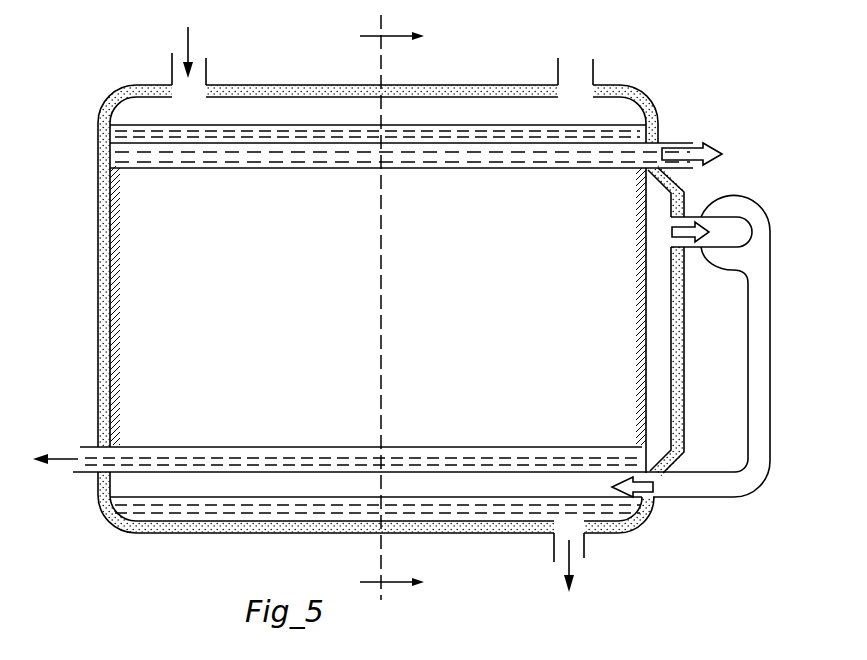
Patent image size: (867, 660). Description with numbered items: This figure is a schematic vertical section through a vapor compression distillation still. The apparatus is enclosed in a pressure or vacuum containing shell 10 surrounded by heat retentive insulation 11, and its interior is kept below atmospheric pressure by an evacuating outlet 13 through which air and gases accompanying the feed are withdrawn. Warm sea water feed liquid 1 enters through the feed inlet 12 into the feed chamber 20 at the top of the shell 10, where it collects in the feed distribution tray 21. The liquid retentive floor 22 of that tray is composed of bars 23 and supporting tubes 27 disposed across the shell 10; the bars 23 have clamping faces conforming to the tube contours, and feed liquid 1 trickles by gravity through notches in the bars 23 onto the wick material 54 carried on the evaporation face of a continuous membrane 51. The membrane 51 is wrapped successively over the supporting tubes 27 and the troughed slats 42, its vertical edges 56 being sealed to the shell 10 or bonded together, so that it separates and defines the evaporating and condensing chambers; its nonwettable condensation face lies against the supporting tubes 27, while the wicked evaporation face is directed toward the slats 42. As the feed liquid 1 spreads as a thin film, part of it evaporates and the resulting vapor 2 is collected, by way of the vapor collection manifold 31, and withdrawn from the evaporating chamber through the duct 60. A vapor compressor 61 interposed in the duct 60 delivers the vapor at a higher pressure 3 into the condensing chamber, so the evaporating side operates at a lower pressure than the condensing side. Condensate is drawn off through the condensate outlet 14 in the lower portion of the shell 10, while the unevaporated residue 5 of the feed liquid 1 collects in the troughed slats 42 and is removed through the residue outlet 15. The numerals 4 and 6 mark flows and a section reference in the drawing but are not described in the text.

The feed liquid 1 is at (189, 50).
The vapor 2 is at (672, 235).
The higher pressure 3 is at (650, 490).
The drain flow / lower liquid 4 is at (437, 512).
The unevaporated residue 5 is at (80, 447).
The section line 6- 6 is at (392, 311).
The shell 10 is at (488, 97).
The heat retentive insulation 11 is at (273, 86).
The feed inlet 12 is at (206, 69).
The evacuating outlet 13 is at (593, 72).
The condensate outlet 14 is at (584, 544).
The residue outlet 15 is at (73, 472).
The feed chamber 20 is at (405, 107).
The feed distribution tray 21 is at (553, 147).
The liquid retentive floor 22 is at (635, 152).
The bars 23 is at (547, 168).
The supporting tubes 27 is at (490, 168).
The vapor collection manifold 31 is at (687, 356).
The troughed slats 42 is at (138, 472).
The continuous membrane 51 is at (377, 347).
The wick material 54 is at (378, 307).
The vertical edges 56 is at (110, 348).
The duct 60 is at (771, 354).
The vapor compressor 61 is at (757, 206).